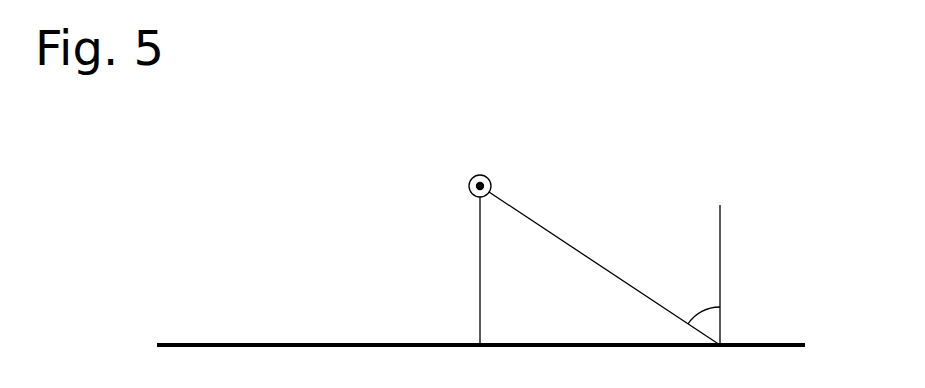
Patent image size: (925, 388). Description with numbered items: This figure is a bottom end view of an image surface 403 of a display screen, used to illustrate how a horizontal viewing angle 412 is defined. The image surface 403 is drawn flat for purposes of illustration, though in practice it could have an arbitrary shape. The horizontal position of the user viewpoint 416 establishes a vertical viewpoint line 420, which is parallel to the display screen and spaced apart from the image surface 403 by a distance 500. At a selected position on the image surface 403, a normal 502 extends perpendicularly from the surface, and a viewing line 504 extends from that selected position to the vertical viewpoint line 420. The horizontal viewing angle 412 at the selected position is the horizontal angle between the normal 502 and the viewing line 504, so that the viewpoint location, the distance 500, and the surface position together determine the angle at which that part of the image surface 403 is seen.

The image surface 403 is at (805, 345).
The horizontal viewing angle 412 is at (705, 313).
The user viewpoint 416 is at (469, 185).
The vertical viewpoint line 420 is at (485, 174).
The distance 500 is at (480, 260).
The normal 502 is at (720, 225).
The viewing line 504 is at (542, 227).